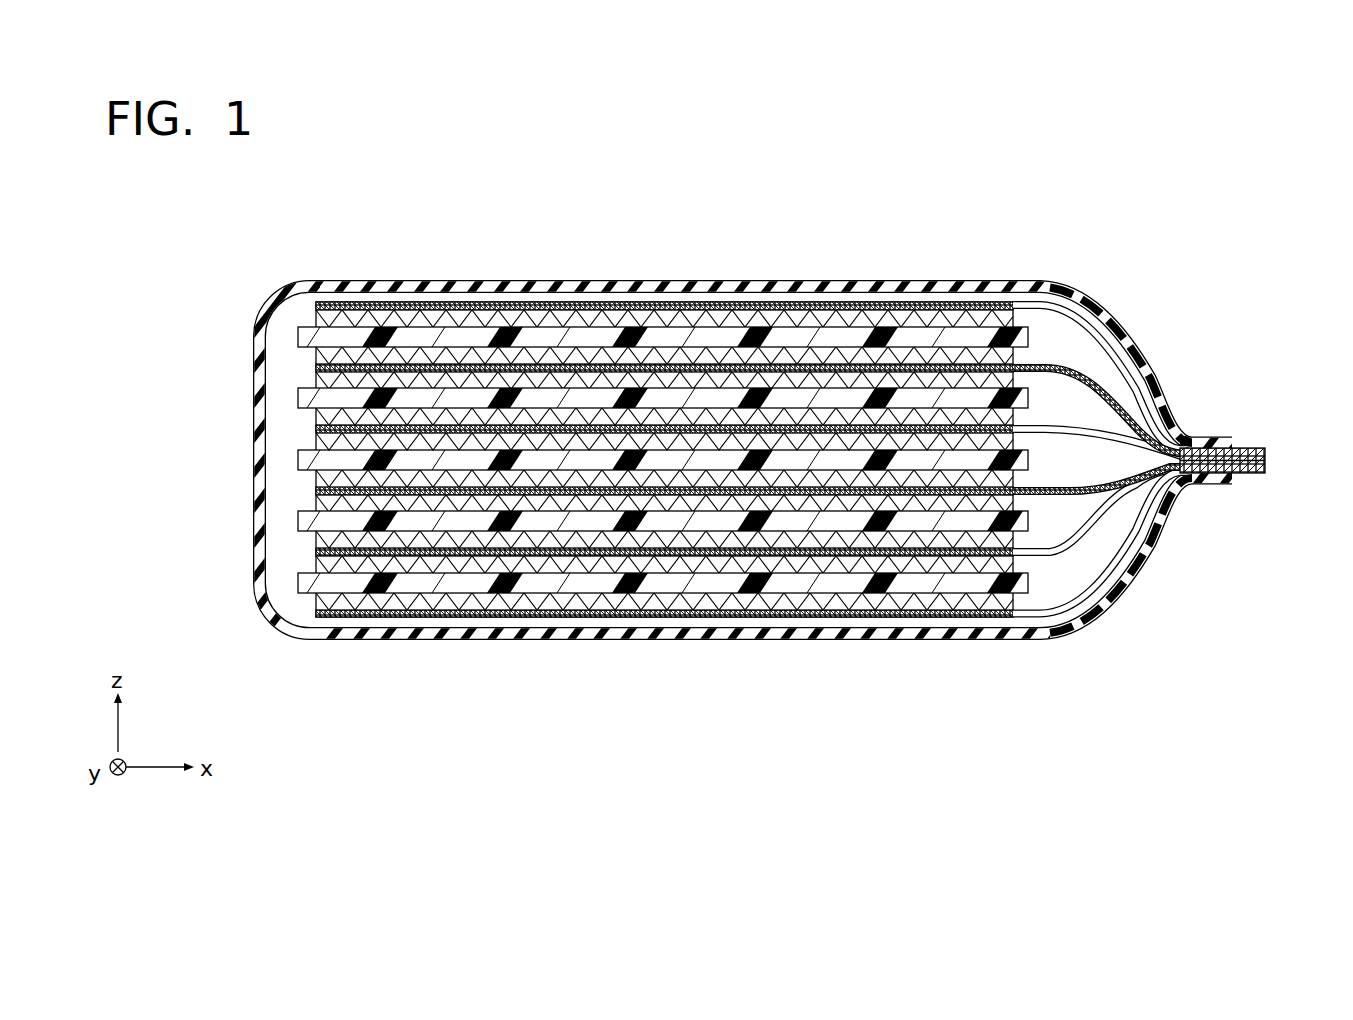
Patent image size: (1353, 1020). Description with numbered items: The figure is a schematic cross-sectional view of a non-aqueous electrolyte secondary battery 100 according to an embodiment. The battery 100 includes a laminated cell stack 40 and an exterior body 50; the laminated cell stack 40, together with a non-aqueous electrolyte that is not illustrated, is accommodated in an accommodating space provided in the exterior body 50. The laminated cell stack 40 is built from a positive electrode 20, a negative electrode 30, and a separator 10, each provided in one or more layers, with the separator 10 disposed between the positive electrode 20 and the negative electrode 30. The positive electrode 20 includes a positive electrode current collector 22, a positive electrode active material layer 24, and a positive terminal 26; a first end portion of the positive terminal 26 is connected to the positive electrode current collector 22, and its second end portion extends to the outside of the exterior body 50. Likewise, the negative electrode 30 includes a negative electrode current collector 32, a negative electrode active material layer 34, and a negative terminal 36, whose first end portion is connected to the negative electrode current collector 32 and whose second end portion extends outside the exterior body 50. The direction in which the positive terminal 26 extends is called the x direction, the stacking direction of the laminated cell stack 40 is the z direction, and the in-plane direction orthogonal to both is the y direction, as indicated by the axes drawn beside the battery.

The non-aqueous electrolyte secondary battery 100 is at (1250, 168).
The separator 10 is at (670, 406).
The positive electrode 20 is at (663, 331).
The positive electrode current collector 22 is at (539, 428).
The positive electrode active material layer 24 is at (453, 417).
The positive terminal 26 is at (1107, 438).
The negative electrode 30 is at (663, 300).
The negative electrode current collector 32 is at (737, 365).
The negative electrode active material layer 34 is at (677, 355).
The negative terminal 36 is at (1122, 545).
The laminated cell stack 40 is at (987, 302).
The exterior body 50 is at (900, 280).